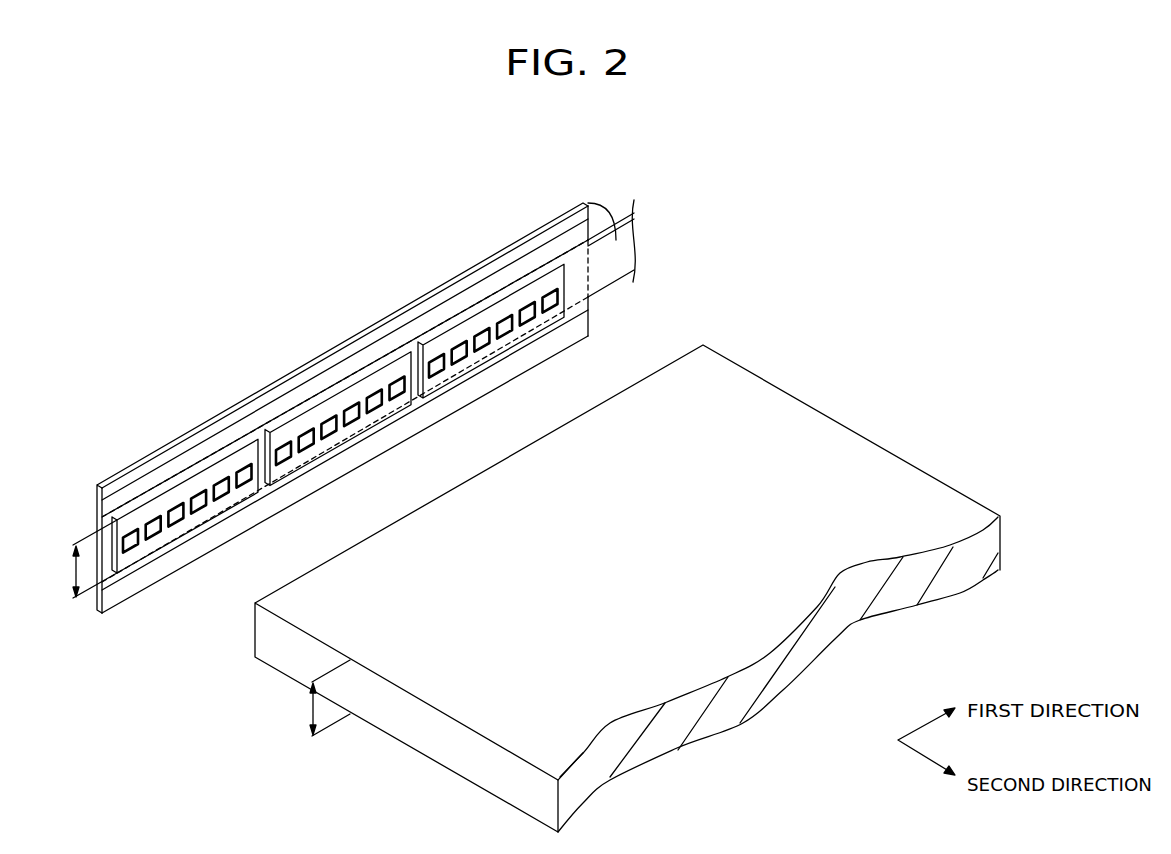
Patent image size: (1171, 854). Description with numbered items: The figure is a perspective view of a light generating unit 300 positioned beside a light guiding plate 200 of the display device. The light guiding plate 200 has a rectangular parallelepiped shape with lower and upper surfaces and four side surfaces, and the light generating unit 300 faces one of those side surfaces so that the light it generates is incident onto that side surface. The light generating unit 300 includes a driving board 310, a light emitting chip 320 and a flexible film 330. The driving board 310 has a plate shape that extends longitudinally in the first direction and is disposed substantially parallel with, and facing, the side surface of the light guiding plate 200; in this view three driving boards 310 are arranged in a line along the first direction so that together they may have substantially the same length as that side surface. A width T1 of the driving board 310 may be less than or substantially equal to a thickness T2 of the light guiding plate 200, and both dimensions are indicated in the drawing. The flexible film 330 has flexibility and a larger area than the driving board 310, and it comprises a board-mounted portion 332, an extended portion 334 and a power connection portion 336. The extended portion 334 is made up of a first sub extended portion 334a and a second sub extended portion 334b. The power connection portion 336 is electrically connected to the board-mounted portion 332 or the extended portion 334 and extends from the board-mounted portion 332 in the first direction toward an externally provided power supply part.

The light guiding plate 200 is at (840, 445).
The light generating unit 300 is at (273, 352).
The driving board 310 is at (221, 492).
The light emitting chip 320 is at (244, 476).
The flexible film 330 is at (172, 462).
The board-mounted portion 332 is at (470, 288).
The extended portion 334 is at (448, 240).
The first sub extended portion 334a is at (402, 428).
The second sub extended portion 334b is at (430, 318).
The power connection portion 336 is at (583, 208).
The width of the driving board T1 is at (83, 559).
The thickness of the light guiding plate T2 is at (316, 698).